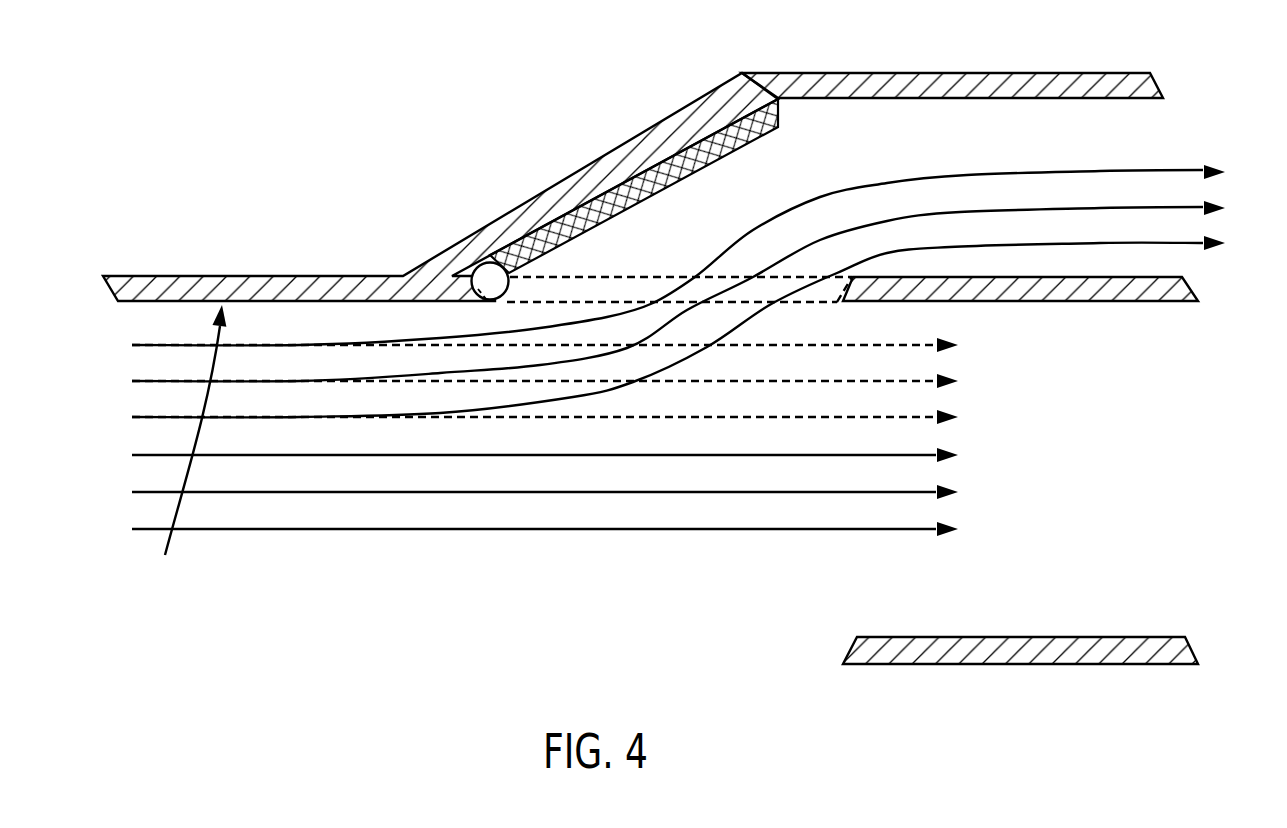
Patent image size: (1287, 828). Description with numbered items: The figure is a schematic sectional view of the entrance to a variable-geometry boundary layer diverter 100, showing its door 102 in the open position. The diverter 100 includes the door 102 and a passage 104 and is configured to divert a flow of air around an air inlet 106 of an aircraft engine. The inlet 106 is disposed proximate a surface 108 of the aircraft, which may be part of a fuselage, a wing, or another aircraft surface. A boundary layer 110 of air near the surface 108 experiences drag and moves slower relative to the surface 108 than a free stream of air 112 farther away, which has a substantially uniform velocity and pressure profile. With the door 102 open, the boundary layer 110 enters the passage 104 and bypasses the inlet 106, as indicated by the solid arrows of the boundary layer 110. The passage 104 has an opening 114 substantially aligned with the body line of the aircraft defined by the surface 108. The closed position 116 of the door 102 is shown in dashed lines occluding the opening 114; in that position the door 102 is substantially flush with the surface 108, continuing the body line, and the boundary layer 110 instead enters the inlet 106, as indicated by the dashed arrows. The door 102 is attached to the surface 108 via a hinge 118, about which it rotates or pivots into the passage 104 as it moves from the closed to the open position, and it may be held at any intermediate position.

The variable-geometry boundary layer diverter 100 is at (180, 122).
The door 102 is at (703, 153).
The passage 104 is at (918, 145).
The air inlet 106 is at (1116, 455).
The surface 108 is at (190, 447).
The boundary layer 110 is at (125, 335).
The free stream of air 112 is at (125, 443).
The opening 114 is at (693, 257).
The closed position 116 is at (627, 273).
The hinge 118 is at (490, 280).